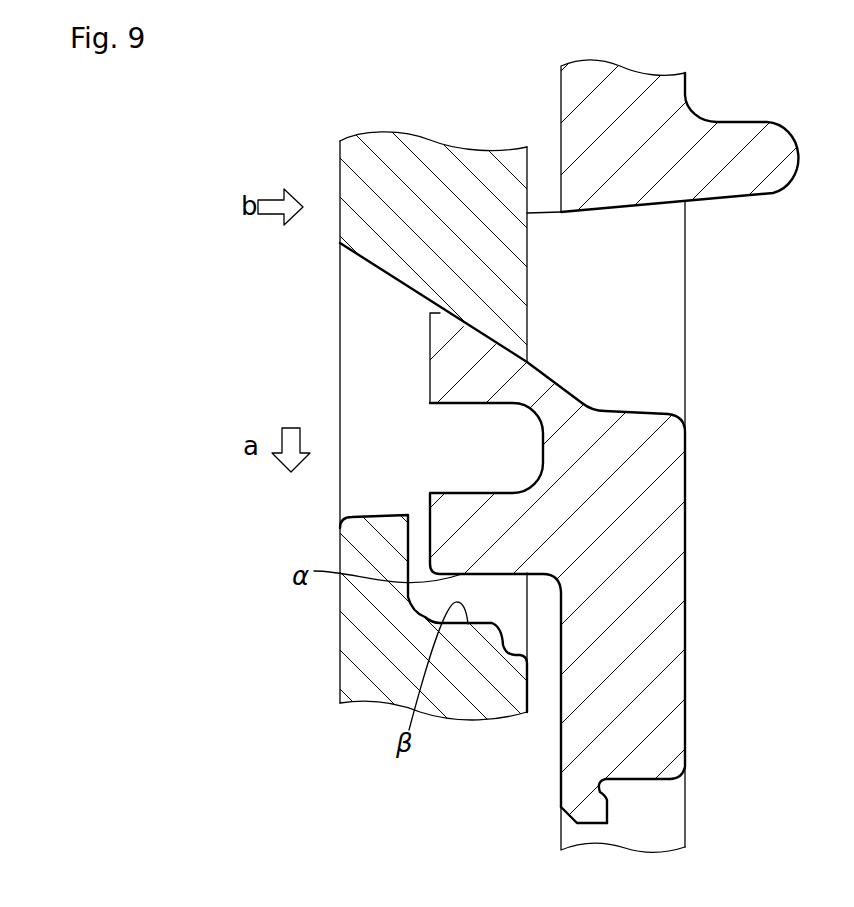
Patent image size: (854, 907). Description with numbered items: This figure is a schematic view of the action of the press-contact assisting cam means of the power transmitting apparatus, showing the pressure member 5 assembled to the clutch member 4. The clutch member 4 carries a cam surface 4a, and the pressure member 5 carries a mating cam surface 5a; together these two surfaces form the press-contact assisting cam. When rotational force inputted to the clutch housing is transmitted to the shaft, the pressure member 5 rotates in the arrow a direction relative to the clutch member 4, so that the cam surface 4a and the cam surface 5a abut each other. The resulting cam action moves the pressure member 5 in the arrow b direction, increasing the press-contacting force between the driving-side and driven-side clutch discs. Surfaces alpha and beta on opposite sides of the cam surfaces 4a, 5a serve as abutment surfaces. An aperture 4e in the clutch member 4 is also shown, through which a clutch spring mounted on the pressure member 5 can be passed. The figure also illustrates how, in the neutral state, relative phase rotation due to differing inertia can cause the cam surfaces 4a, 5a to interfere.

The pressure member 5 is at (315, 167).
The clutch member 4 is at (711, 646).
The cam surface 4a is at (478, 311).
The cam surface 5a is at (487, 357).
The aperture 4e is at (589, 823).